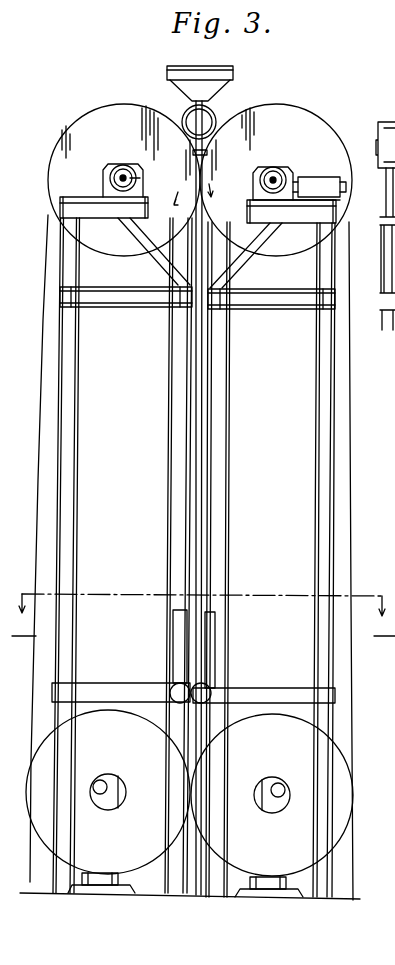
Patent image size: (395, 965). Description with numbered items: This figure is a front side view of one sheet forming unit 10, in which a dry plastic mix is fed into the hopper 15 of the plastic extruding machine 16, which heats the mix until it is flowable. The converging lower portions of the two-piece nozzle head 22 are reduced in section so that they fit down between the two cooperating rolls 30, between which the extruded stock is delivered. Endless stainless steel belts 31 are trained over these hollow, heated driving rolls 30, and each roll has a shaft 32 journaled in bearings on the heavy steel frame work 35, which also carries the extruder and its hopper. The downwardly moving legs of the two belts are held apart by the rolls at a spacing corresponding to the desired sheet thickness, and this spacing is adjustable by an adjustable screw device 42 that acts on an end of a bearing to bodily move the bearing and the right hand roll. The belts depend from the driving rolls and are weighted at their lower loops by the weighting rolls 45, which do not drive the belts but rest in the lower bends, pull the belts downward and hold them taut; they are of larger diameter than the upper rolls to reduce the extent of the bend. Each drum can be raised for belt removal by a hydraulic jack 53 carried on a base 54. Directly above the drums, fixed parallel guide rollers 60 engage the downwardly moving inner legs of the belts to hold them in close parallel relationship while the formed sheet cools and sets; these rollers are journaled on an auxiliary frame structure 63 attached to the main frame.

The sheet forming unit 10 is at (285, 106).
The hopper 15 is at (228, 78).
The plastic extruding machine 16 is at (223, 117).
The nozzle head 22 is at (207, 152).
The roll 30 is at (134, 112).
The endless stainless steel belt 31 is at (47, 222).
The shaft 32 is at (124, 172).
The frame work 35 is at (75, 248).
The adjustable screw device 42 is at (307, 182).
The weighting roll 45 is at (52, 815).
The hydraulic jack 53 is at (100, 879).
The base 54 is at (130, 895).
The guide roller 60 is at (180, 677).
The auxiliary frame structure 63 is at (107, 690).